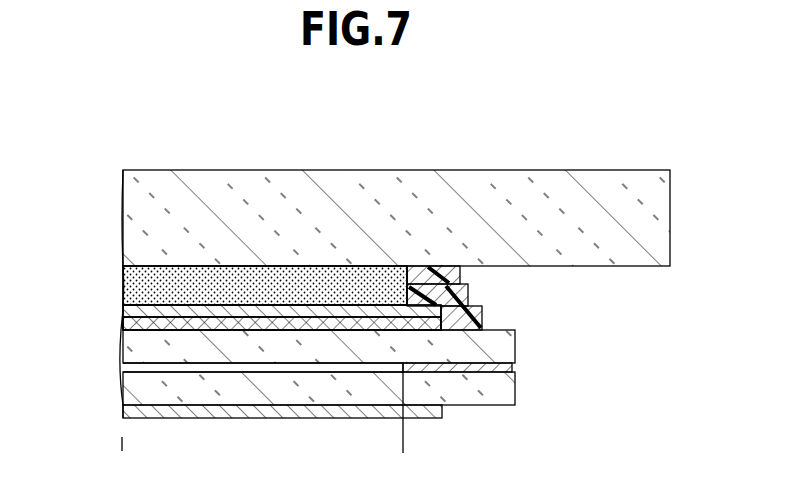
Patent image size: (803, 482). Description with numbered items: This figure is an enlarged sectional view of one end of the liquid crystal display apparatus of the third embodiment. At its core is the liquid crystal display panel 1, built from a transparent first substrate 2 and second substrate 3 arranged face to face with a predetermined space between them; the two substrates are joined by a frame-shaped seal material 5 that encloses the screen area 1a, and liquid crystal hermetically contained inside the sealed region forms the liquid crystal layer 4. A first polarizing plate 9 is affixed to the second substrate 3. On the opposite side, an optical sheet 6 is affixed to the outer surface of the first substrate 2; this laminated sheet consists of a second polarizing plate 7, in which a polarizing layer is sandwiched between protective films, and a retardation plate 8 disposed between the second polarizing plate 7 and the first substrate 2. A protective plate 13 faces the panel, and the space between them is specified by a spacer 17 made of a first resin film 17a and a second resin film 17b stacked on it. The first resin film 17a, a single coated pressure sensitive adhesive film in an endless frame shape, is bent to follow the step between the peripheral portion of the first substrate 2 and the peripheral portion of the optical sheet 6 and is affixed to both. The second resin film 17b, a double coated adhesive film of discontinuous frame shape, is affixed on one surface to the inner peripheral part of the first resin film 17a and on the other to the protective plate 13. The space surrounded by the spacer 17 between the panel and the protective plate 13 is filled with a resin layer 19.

The liquid crystal display panel 1 is at (513, 408).
The screen area 1a is at (403, 444).
The first substrate 2 is at (498, 350).
The second substrate 3 is at (503, 390).
The liquid crystal layer 4 is at (140, 367).
The seal material 5 is at (472, 366).
The optical sheet 6 is at (113, 313).
The second polarizing plate 7 is at (140, 303).
The retardation plate 8 is at (140, 326).
The first polarizing plate 9 is at (135, 415).
The protective plate 13 is at (200, 195).
The spacer 17 is at (490, 228).
The first resin film 17a is at (480, 314).
The second resin film 17b is at (434, 272).
The resin layer 19 is at (293, 275).